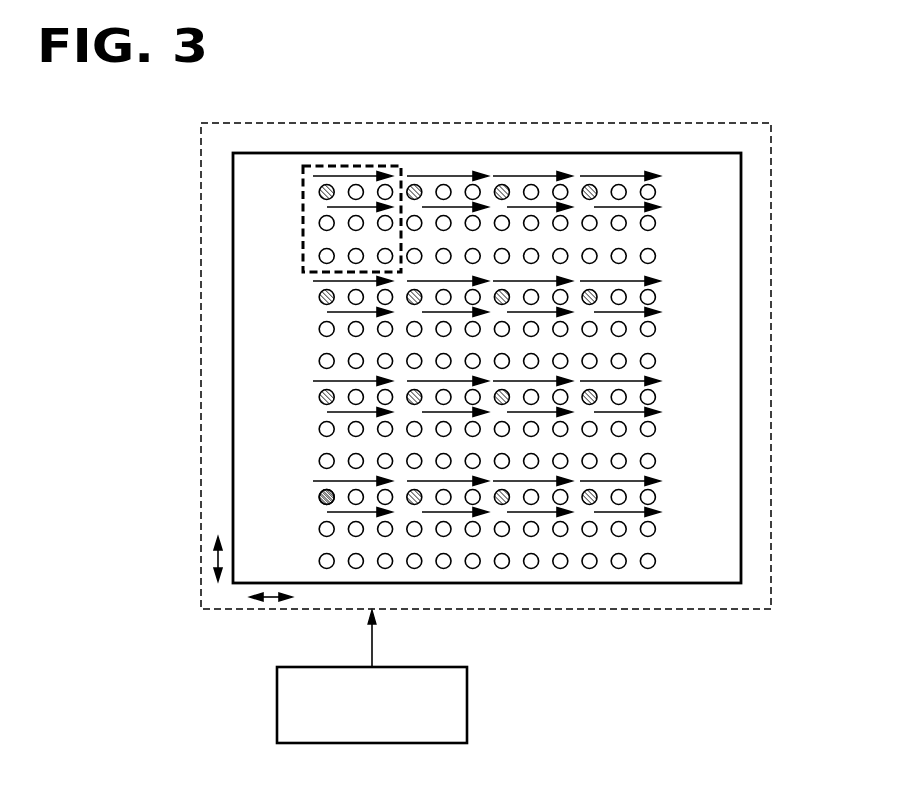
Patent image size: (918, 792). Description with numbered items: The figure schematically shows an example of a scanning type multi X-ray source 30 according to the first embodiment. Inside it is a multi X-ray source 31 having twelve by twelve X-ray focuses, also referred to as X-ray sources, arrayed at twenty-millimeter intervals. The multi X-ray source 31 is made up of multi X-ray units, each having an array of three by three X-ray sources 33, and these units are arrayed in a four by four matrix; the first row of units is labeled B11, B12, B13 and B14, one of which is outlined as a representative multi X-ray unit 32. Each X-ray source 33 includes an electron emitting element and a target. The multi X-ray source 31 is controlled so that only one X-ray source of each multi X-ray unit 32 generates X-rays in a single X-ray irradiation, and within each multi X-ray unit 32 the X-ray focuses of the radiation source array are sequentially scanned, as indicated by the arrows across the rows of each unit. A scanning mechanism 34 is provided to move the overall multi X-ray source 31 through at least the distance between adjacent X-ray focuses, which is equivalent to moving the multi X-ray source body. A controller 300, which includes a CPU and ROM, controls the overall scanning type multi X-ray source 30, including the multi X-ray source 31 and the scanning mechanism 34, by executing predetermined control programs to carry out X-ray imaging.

The scanning type multi X-ray source 30 is at (201, 150).
The multi X-ray source 31 is at (233, 347).
The multi X-ray unit 32 is at (303, 258).
The X-ray source 33 is at (321, 495).
The scanning mechanism 34 is at (250, 597).
The multi X-ray unit B11 is at (348, 166).
The multi X-ray unit B12 is at (443, 168).
The multi X-ray unit B13 is at (532, 168).
The multi X-ray unit B14 is at (617, 168).
The controller 300 is at (467, 705).